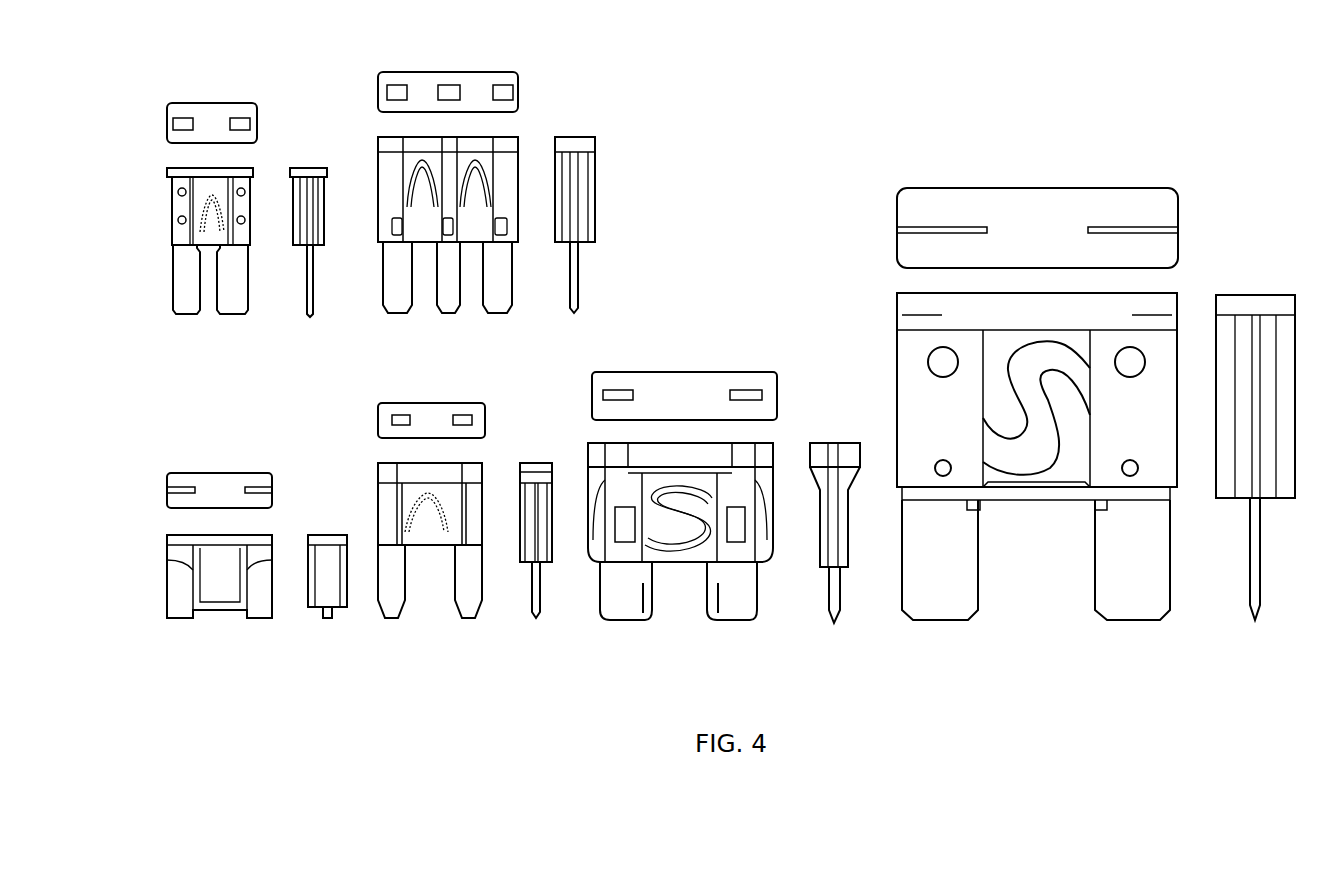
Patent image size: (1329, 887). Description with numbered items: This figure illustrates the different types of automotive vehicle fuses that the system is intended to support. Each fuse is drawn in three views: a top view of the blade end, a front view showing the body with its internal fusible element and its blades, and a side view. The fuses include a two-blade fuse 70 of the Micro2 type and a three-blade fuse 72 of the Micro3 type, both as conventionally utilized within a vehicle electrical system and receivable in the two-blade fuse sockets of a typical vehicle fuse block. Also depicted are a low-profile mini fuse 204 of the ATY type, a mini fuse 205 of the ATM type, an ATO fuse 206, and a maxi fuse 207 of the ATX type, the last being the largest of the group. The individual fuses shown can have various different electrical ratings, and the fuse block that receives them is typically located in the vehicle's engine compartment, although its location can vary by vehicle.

The two-blade fuse 70 is at (167, 217).
The three-blade fuse 72 is at (512, 147).
The low-profile mini fuse (ATY) 204 is at (256, 522).
The mini fuse (ATM) 205 is at (471, 509).
The ATO fuse 206 is at (724, 492).
The maxi fuse (ATX) 207 is at (1095, 402).